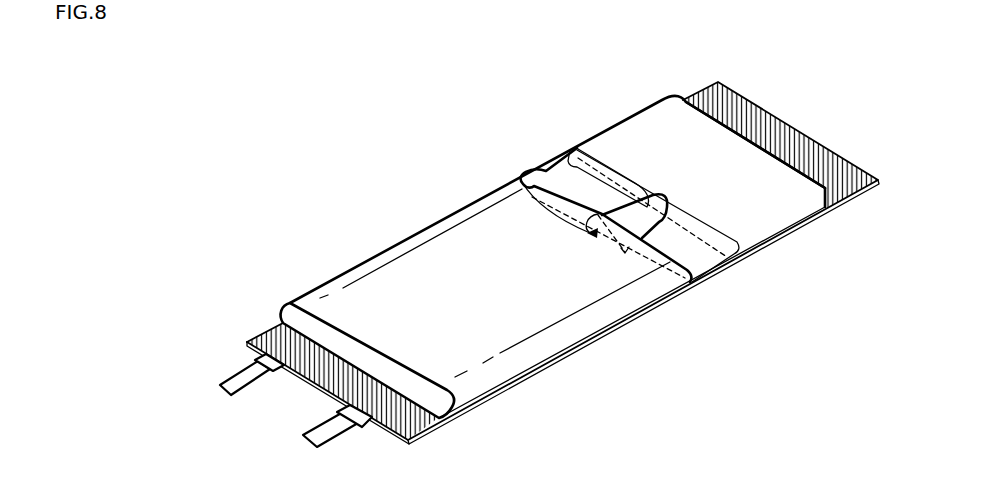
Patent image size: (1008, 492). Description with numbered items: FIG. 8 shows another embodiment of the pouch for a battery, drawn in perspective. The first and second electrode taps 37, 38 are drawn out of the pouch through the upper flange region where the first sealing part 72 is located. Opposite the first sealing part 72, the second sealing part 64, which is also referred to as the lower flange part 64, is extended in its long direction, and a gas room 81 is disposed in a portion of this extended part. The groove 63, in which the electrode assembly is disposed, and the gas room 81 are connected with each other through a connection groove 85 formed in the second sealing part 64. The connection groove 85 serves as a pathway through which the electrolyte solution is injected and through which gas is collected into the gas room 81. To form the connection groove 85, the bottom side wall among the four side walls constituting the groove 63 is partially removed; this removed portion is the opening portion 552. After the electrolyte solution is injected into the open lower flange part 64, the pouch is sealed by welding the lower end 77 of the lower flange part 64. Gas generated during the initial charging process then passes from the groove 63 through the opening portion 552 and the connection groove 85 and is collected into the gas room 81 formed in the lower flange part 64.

The first electrode tap 37 is at (217, 384).
The second electrode tap 38 is at (303, 437).
The groove 63 is at (414, 230).
The second sealing part 64 is at (884, 198).
The first sealing part 72 is at (414, 424).
The lower end 77 is at (784, 122).
The gas room 81 is at (643, 120).
The connection groove 85 is at (570, 150).
The opening portion 552 is at (520, 178).